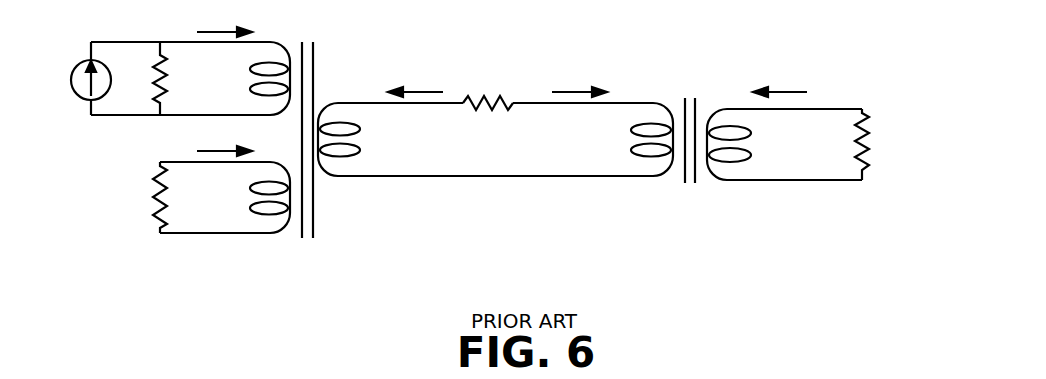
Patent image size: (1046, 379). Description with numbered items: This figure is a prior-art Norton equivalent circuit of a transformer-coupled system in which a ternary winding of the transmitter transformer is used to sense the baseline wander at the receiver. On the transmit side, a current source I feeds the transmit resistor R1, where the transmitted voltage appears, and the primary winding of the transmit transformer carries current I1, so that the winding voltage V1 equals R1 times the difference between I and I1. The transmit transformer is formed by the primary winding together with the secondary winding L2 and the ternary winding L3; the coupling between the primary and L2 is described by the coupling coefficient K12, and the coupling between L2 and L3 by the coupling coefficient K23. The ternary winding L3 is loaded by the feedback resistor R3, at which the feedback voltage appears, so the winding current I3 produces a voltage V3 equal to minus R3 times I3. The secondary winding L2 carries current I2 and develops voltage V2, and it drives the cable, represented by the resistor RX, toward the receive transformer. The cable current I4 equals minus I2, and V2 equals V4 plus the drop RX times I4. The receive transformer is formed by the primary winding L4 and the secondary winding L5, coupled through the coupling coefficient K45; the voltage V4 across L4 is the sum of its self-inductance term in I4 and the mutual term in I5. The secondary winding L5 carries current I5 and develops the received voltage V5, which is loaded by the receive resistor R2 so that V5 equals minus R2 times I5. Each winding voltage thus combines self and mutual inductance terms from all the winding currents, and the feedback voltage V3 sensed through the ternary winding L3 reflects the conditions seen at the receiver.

The current source I is at (85, 80).
The transmit resistor R1 is at (141, 78).
The voltage across winding L1 V1 is at (192, 80).
The ternary winding L3 is at (254, 137).
The current in winding L1 I1 is at (224, 21).
The coupling coefficient between L1 and L2 K12 is at (308, 74).
The coupling coefficient between L2 and L3 K23 is at (304, 202).
The current in ternary winding L3 I3 is at (224, 139).
The feedback resistor R3 is at (141, 197).
The feedback voltage V3 is at (192, 198).
The secondary winding of transmit transformer L2 is at (356, 139).
The current in winding L2 I2 is at (415, 81).
The cable resistance RX is at (488, 90).
The voltage across winding L2 V2 is at (442, 141).
The current in winding L4 I4 is at (579, 81).
The voltage across winding L4 V4 is at (537, 141).
The primary winding of receive transformer L4 is at (635, 139).
The coupling coefficient between L4 and L5 K45 is at (688, 127).
The current in winding L5 I5 is at (780, 81).
The secondary winding of receive transformer L5 is at (746, 144).
The received voltage across winding L5 V5 is at (819, 141).
The receive resistor R2 is at (879, 144).